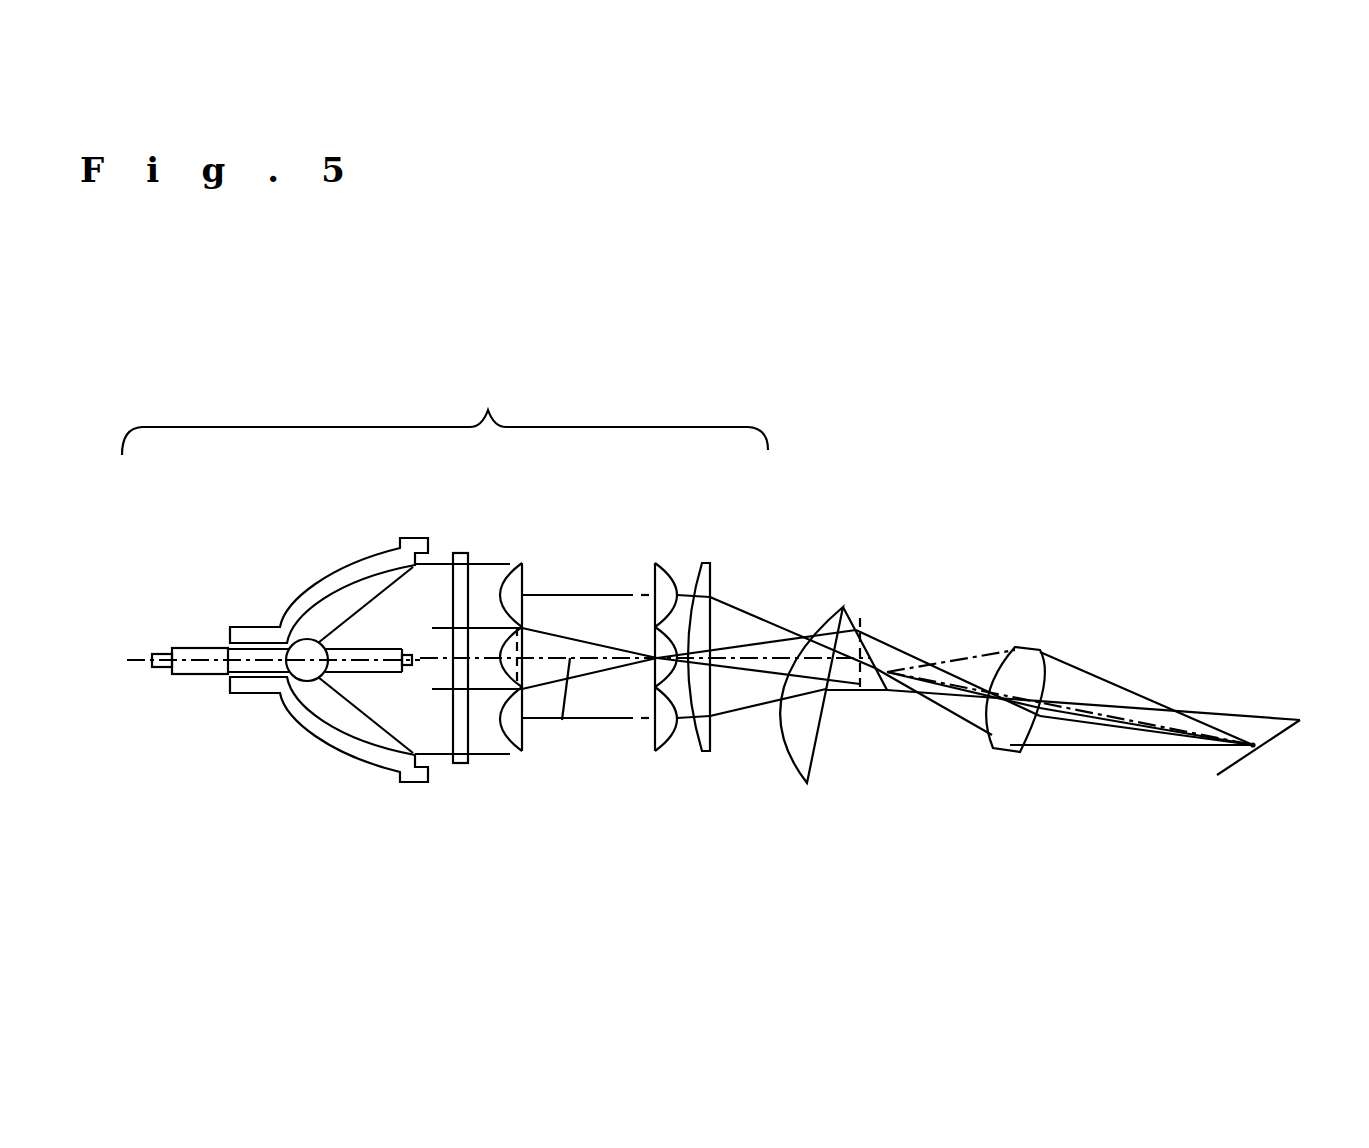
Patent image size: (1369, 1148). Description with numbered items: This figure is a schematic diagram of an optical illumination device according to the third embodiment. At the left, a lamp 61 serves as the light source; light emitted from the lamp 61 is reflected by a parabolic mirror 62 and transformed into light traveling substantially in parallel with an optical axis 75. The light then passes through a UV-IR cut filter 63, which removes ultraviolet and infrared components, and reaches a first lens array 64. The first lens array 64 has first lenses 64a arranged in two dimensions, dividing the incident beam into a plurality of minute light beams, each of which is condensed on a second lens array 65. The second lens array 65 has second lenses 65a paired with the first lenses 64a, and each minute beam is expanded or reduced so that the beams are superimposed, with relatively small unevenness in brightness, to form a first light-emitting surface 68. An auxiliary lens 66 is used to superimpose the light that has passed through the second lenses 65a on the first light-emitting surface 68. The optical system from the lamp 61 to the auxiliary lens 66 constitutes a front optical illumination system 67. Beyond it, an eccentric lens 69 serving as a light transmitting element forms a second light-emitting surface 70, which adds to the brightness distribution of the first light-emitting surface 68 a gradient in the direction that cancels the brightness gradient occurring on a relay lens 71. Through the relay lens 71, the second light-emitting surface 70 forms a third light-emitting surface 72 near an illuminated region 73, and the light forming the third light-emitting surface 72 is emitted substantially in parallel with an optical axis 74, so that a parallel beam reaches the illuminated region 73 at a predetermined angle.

The lamp 61 is at (185, 645).
The parabolic mirror 62 is at (322, 578).
The UV-IR cut filter 63 is at (457, 553).
The first lens array 64 is at (517, 562).
The first lens 64a is at (505, 676).
The second lens array 65 is at (660, 563).
The second lens 65a is at (653, 713).
The auxiliary lens 66 is at (704, 563).
The front optical illumination system 67 is at (445, 408).
The first light-emitting surface 68 is at (862, 618).
The eccentric lens 69 is at (841, 607).
The second light-emitting surface 70 is at (890, 655).
The relay lens 71 is at (1020, 646).
The third light-emitting surface 72 is at (1301, 722).
The illuminated region 73 is at (1228, 773).
The optical axis 74 is at (1122, 722).
The optical axis 75 is at (563, 730).